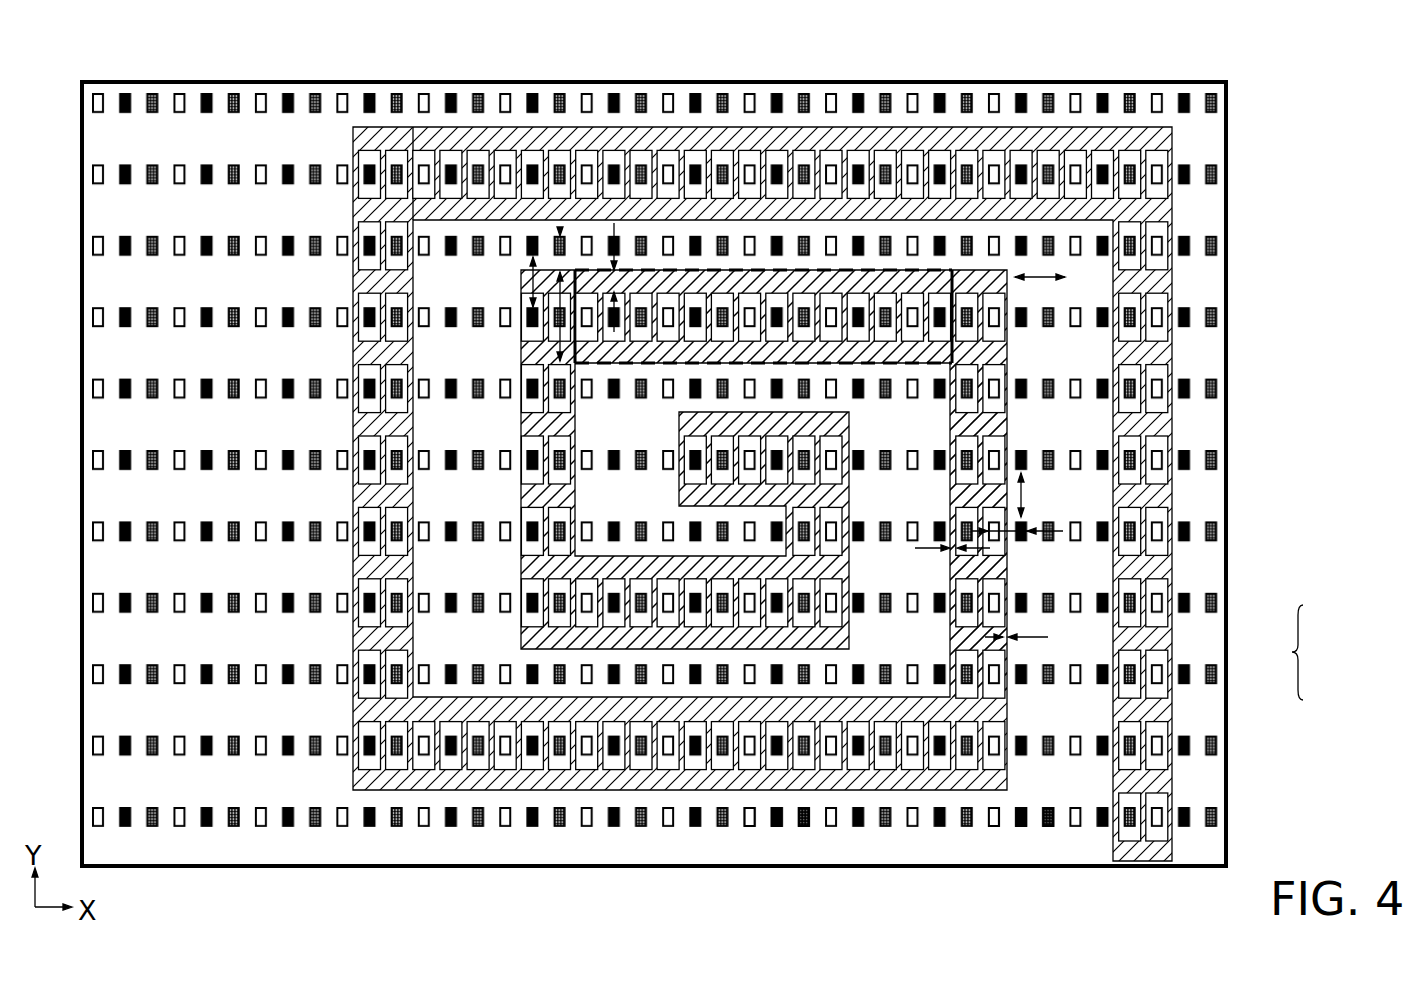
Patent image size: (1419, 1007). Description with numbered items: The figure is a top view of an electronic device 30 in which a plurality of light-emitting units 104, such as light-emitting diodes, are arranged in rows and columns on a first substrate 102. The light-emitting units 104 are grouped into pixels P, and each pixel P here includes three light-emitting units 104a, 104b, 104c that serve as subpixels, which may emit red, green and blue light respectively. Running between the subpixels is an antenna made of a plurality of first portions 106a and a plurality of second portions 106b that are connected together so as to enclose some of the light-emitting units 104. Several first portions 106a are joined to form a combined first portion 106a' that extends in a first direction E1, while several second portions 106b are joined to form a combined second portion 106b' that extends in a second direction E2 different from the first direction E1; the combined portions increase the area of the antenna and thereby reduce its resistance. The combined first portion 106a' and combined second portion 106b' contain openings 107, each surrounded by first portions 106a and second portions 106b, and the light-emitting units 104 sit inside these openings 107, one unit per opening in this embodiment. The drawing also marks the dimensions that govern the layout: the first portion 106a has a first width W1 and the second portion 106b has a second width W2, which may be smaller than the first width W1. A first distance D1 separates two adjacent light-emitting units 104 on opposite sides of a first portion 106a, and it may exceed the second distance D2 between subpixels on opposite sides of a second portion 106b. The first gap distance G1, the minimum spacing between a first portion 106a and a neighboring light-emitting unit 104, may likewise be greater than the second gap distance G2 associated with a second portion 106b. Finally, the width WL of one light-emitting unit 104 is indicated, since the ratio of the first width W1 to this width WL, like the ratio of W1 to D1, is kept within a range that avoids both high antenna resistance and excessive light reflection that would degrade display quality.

The electronic device 30 is at (58, 60).
The first substrate 102 is at (1210, 208).
The light-emitting units 104 is at (478, 827).
The light-emitting unit 104a is at (747, 827).
The light-emitting unit 104b is at (777, 827).
The light-emitting unit 104c is at (805, 827).
The first portion 106a is at (762, 444).
The combined first portion 106a' is at (665, 238).
The second portion 106b is at (817, 483).
The combined second portion 106b' is at (1033, 530).
The openings 107 is at (483, 152).
The pixel P is at (1288, 652).
The first distance D1 is at (530, 284).
The second distance D2 is at (1060, 535).
The first direction E1 is at (1057, 282).
The second direction E2 is at (1041, 496).
The first gap distance G1 is at (560, 230).
The second gap distance G2 is at (1034, 642).
The width of light-emitting unit WL is at (562, 366).
The first width W1 is at (616, 332).
The second width W2 is at (935, 565).